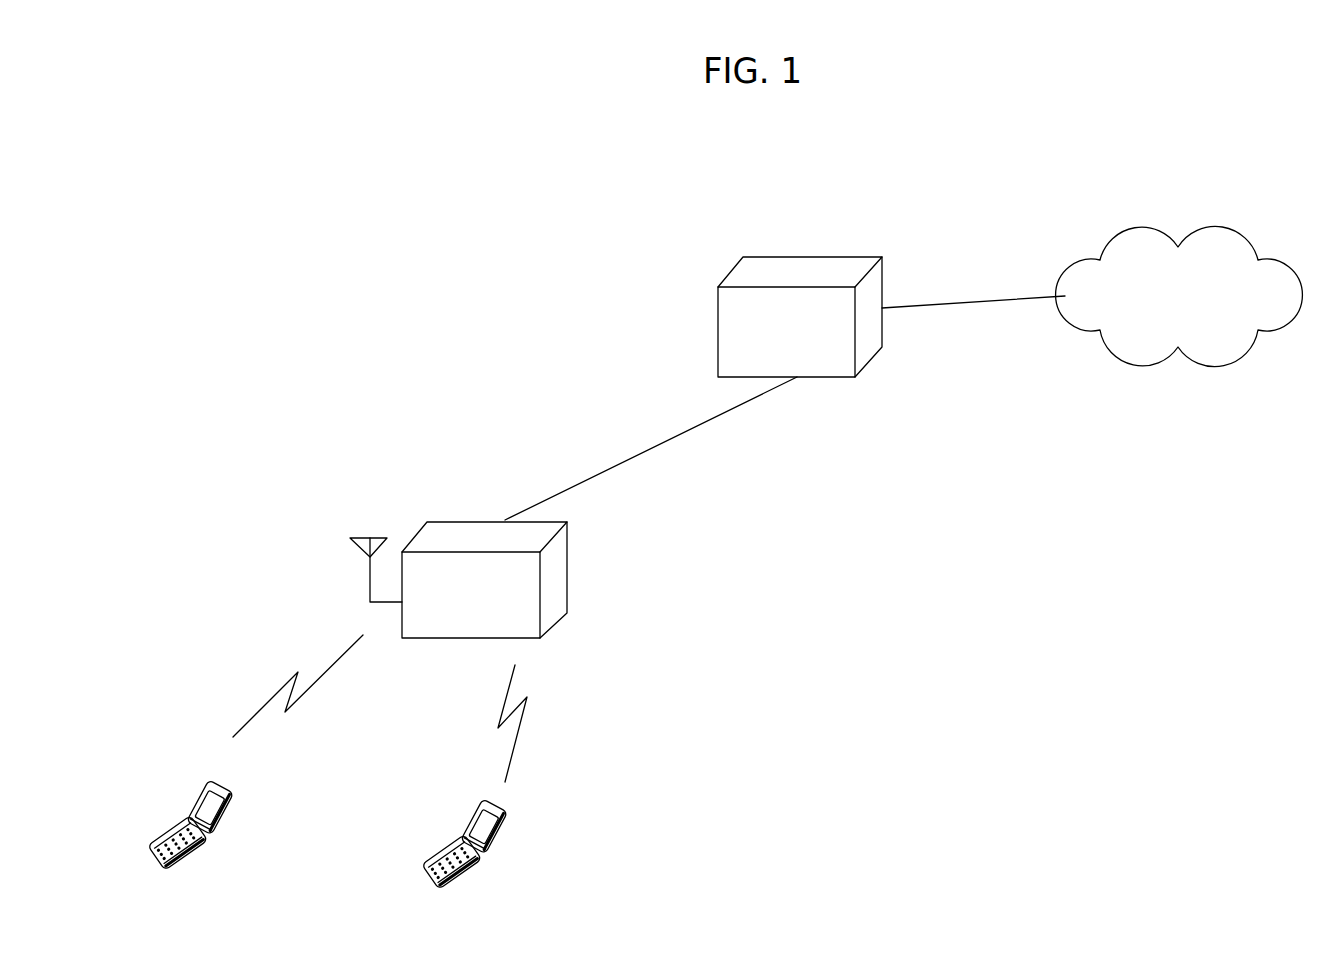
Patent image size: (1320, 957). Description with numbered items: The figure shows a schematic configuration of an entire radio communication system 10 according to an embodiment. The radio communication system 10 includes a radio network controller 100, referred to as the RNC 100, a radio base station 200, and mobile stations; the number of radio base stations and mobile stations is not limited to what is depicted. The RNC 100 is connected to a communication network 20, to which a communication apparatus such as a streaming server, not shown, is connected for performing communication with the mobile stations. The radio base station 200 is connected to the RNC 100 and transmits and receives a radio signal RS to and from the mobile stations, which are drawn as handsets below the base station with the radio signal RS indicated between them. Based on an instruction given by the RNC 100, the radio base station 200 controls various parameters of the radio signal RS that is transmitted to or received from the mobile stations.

The radio communication system 10 is at (636, 231).
The communication network 20 is at (1201, 228).
The radio network controller 100 is at (790, 265).
The radio base station 200 is at (475, 530).
The radio signal RS is at (267, 702).